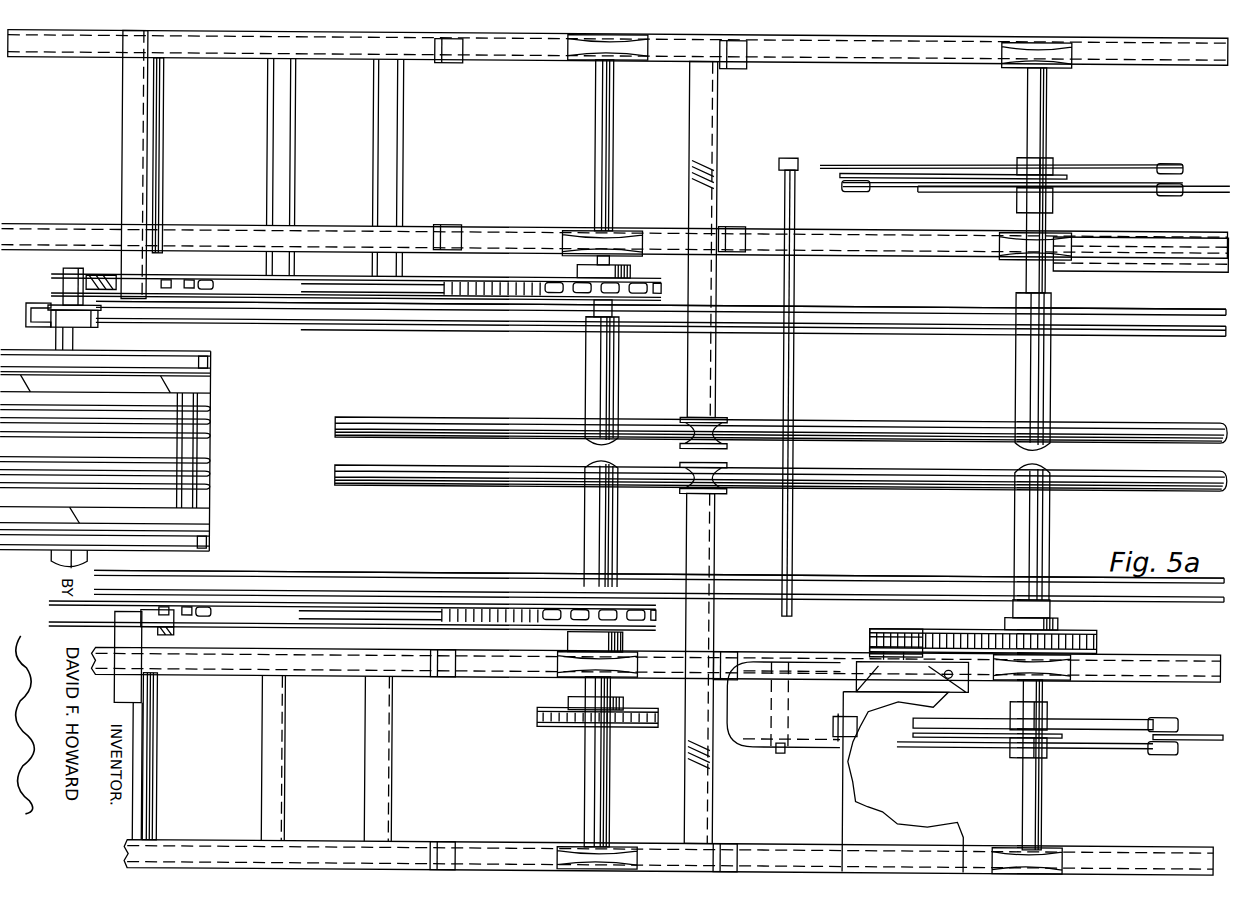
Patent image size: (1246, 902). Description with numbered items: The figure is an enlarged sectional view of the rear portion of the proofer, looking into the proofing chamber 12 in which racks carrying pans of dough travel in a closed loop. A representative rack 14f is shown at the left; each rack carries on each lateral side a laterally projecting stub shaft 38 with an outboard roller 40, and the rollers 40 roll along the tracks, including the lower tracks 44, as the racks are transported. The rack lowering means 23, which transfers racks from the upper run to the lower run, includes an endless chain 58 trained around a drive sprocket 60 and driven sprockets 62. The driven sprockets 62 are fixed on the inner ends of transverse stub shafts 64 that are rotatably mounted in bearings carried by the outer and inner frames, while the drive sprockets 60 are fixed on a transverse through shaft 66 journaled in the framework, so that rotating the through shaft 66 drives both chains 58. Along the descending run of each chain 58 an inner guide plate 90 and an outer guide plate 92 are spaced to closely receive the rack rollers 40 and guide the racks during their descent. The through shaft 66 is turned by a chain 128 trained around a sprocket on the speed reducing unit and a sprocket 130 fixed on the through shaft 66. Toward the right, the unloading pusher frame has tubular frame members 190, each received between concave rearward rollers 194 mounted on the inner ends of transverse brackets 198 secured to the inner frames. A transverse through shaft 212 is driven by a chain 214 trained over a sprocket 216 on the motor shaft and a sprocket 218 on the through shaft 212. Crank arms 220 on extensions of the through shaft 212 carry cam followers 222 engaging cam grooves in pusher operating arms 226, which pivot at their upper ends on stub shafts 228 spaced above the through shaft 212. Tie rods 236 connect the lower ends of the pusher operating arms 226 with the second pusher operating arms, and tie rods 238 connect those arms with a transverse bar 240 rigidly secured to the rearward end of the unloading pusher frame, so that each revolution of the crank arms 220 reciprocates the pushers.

The proofing chamber 12 is at (897, 379).
The rack 14f is at (213, 360).
The rack lowering means 23 is at (330, 305).
The stub shaft 38 is at (68, 272).
The roller 40 is at (58, 303).
The lower track 44 is at (475, 329).
The endless chain 58 is at (420, 300).
The drive sprocket 60 is at (553, 290).
The driven sprocket 62 is at (200, 283).
The stub shaft 64 is at (158, 143).
The through shaft 66 is at (587, 380).
The guide plate 90 is at (103, 278).
The guide plate 92 is at (33, 306).
The chain 128 is at (648, 730).
The sprocket 130 is at (573, 703).
The frame member 190 is at (1105, 420).
The rearward roller 194 is at (712, 428).
The bracket 198 is at (713, 373).
The through shaft 212 is at (1050, 365).
The chain 214 is at (1100, 632).
The sprocket 216 is at (882, 650).
The sprocket 218 is at (1059, 620).
The crank arm 220 is at (980, 186).
The cam follower 222 is at (937, 171).
The pusher operating arm 226 is at (1051, 159).
The stub shaft 228 is at (1045, 104).
The tie rod 236 is at (900, 186).
The tie rod 238 is at (880, 164).
The bar 240 is at (795, 377).